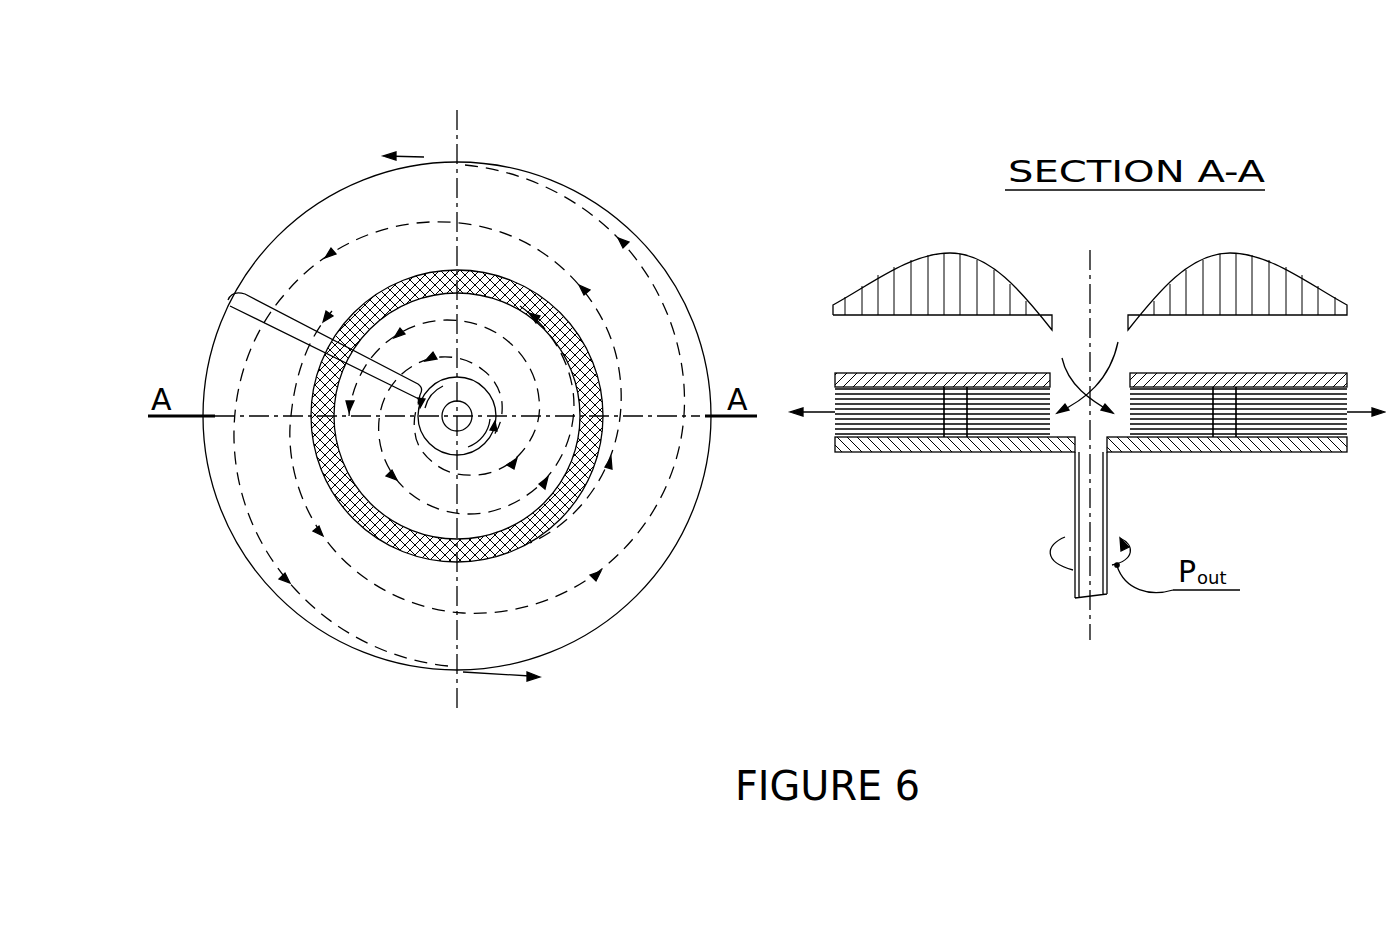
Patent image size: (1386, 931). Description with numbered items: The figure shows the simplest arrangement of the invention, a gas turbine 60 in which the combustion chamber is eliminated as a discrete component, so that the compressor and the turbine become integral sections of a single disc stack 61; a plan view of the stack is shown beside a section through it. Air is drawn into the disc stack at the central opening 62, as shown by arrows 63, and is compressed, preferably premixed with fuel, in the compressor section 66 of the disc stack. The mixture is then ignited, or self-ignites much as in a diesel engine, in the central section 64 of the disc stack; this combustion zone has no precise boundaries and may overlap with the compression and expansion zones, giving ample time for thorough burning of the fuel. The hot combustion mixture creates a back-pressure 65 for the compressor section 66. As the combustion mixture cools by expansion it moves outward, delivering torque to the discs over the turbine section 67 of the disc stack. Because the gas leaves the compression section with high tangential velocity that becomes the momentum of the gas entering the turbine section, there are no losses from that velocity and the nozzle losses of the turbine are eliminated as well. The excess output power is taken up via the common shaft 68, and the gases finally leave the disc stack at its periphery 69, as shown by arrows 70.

The gas turbine 60 is at (268, 148).
The disc stack 61 is at (311, 327).
The central opening 62 is at (485, 388).
The arrows 63 is at (712, 550).
The central section 64 is at (388, 538).
The back-pressure 65 is at (935, 280).
The compressor section 66 is at (497, 484).
The turbine section 67 is at (497, 632).
The common shaft 68 is at (1083, 583).
The periphery 69 is at (685, 302).
The arrows 70 is at (424, 156).